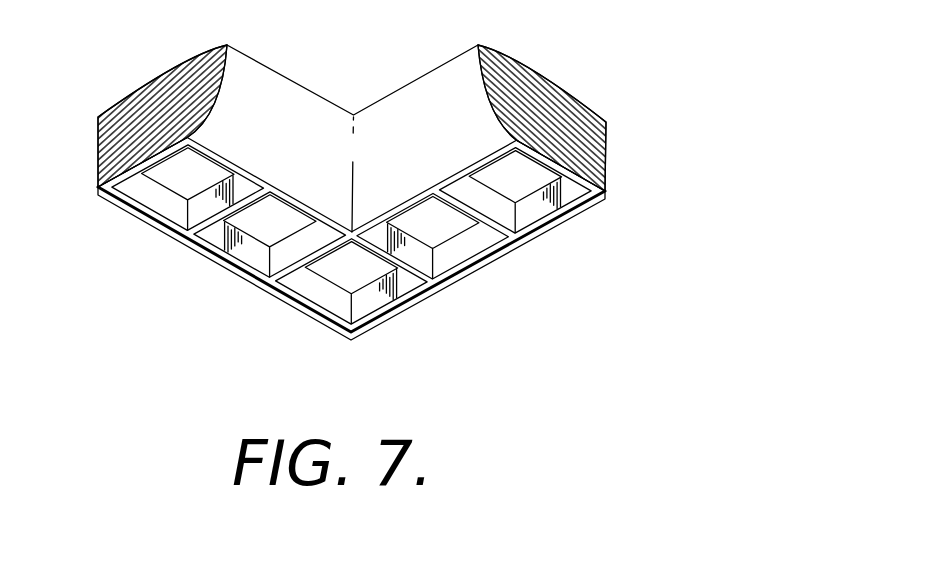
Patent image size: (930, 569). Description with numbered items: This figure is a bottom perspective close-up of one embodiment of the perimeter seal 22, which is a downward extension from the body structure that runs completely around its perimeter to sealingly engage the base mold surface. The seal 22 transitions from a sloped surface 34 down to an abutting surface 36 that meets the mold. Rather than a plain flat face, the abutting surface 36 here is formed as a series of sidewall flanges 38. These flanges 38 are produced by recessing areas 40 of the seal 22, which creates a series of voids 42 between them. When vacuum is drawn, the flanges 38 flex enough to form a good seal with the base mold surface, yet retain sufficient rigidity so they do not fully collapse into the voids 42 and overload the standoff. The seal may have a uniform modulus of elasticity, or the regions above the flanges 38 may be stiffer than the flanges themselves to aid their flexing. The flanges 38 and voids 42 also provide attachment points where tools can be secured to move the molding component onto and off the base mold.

The perimeter seal 22 is at (549, 45).
The sloped surface 34 is at (378, 99).
The abutting surface 36 is at (498, 278).
The sidewall flanges 38 is at (293, 273).
The recessed areas 40 is at (240, 222).
The voids 42 is at (563, 194).